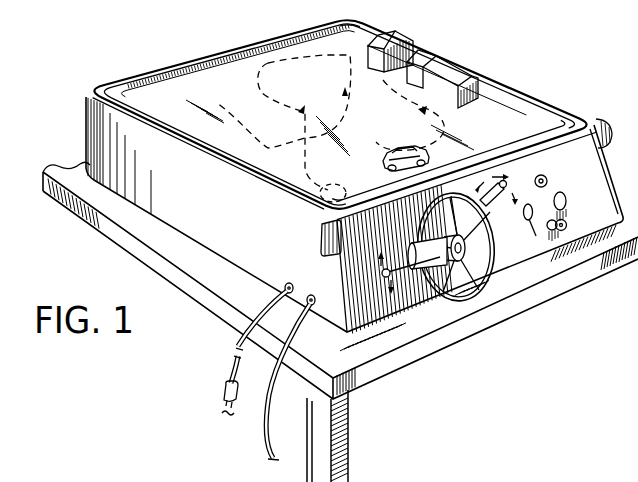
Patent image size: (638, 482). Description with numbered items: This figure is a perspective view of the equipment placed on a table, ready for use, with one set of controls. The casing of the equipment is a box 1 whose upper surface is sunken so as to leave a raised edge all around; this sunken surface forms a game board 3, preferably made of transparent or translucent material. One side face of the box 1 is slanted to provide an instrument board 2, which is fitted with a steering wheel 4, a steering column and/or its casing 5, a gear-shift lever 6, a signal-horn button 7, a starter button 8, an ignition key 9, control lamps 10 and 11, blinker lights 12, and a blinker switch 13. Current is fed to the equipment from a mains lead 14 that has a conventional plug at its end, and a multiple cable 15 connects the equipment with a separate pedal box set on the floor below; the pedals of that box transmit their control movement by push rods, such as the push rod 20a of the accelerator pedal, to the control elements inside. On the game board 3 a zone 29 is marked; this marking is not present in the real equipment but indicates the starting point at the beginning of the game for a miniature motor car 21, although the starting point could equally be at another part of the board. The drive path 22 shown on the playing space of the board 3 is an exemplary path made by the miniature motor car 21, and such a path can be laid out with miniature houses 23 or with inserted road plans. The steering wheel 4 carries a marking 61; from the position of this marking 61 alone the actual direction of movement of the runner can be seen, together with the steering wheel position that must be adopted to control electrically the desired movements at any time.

The box 1 is at (134, 62).
The instrument board 2 is at (512, 262).
The game board 3 is at (198, 85).
The steering wheel 4 is at (472, 295).
The steering column and/or its casing 5 is at (410, 246).
The gear-shift lever 6 is at (490, 201).
The signal-horn button 7 is at (470, 245).
The starter button 8 is at (547, 178).
The ignition key 9 is at (564, 232).
The control lamp 10 is at (567, 199).
The control lamp 11 is at (531, 229).
The blinker lights 12 is at (612, 106).
The blinker switch 13 is at (398, 250).
The mains lead 14 is at (233, 367).
The multiple cable 15 is at (269, 434).
The push rod 20a is at (476, 481).
The miniature motor car 21 is at (401, 146).
The drive path 22 is at (278, 62).
The miniature houses 23 is at (450, 72).
The zone 29 is at (323, 217).
The marking 61 is at (451, 198).